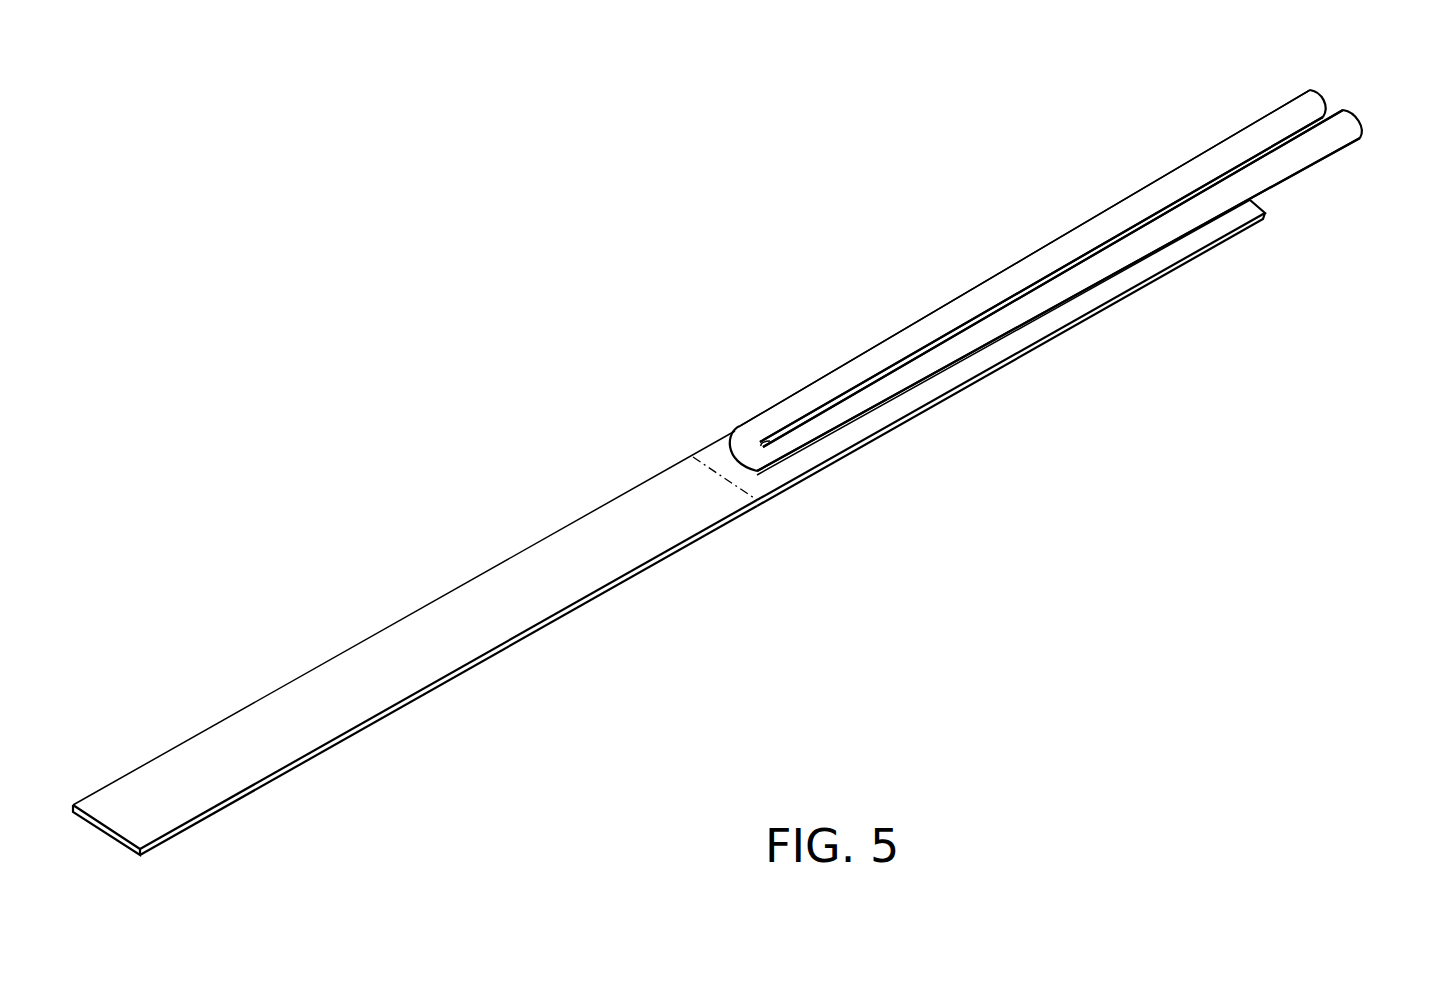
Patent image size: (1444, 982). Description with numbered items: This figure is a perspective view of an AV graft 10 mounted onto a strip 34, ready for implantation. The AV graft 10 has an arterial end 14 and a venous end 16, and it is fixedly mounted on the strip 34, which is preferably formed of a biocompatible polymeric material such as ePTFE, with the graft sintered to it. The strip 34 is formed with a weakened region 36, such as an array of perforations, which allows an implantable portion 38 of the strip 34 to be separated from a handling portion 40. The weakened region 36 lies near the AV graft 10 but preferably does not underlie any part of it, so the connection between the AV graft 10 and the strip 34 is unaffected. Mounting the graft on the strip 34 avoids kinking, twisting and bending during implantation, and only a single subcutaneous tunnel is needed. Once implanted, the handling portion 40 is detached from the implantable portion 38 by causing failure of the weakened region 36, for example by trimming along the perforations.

The AV graft 10 is at (1046, 244).
The arterial end 14 is at (1352, 128).
The venous end 16 is at (1311, 100).
The strip 34 is at (803, 488).
The weakened region 36 is at (702, 462).
The implantable portion 38 is at (1013, 358).
The handling portion 40 is at (472, 665).